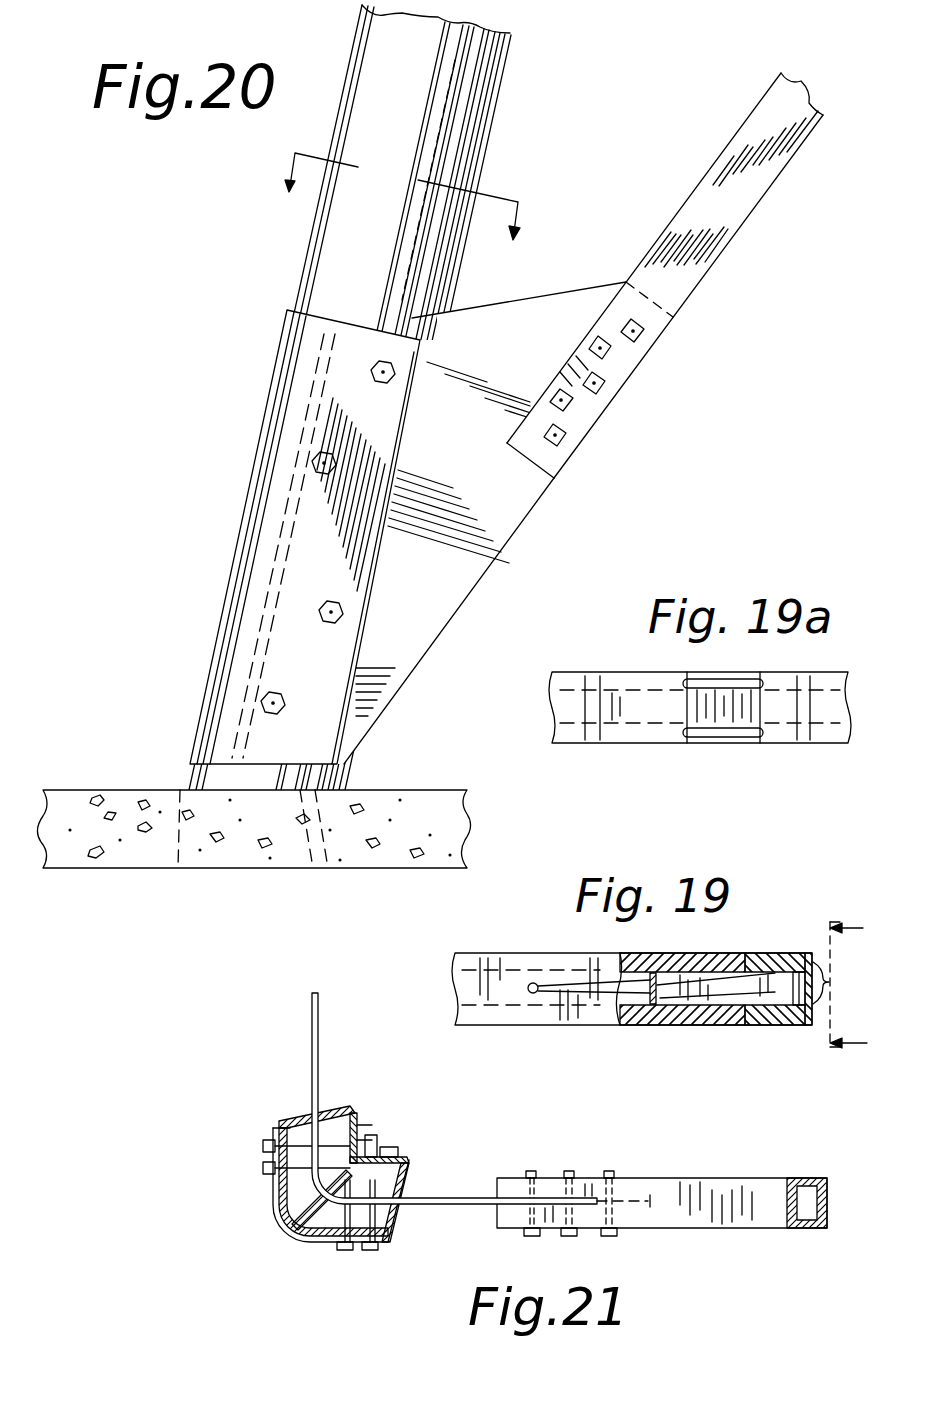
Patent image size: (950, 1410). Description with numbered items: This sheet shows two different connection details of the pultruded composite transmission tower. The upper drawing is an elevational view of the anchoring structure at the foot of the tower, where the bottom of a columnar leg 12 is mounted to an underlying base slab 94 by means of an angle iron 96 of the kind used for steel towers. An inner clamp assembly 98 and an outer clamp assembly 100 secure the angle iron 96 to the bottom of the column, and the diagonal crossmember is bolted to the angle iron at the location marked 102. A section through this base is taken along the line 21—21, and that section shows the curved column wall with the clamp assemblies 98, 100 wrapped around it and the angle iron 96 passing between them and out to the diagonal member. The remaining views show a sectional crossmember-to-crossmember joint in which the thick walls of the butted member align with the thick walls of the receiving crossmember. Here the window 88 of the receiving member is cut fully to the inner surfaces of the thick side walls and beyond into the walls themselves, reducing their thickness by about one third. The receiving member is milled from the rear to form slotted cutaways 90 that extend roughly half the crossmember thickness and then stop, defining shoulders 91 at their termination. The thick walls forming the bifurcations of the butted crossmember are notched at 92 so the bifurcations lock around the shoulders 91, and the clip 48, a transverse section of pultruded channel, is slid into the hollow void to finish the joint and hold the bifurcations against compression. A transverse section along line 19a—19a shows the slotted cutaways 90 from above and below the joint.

In FIG. 20, the columnar leg 12 is at (306, 265).
In FIG. 21, the columnar leg 12 is at (261, 1226).
In FIG. 20, the section line 21— 21 is at (387, 218).
In FIG. 20, the angle iron 96 is at (535, 305).
In FIG. 21, the angle iron 96 is at (310, 1033).
In FIG. 20, the outer clamp assembly 100 is at (240, 512).
In FIG. 21, the outer clamp assembly 100 is at (312, 1244).
In FIG. 20, the diagonal crossmember bolted connection 102 is at (573, 405).
In FIG. 20, the base slab 94 is at (122, 789).
In FIG. 19A, the slotted cutaway 90 is at (737, 680).
In FIG. 19, the slotted cutaway 90 is at (830, 982).
In FIG. 19, the shoulder 91 is at (760, 957).
In FIG. 19, the clip 48 is at (650, 993).
In FIG. 19, the window 88 is at (734, 1010).
In FIG. 19, the notch 92 is at (783, 1023).
In FIG. 19, the section line 19a— 19a is at (860, 990).
In FIG. 21, the inner clamp assembly 98 is at (356, 1116).